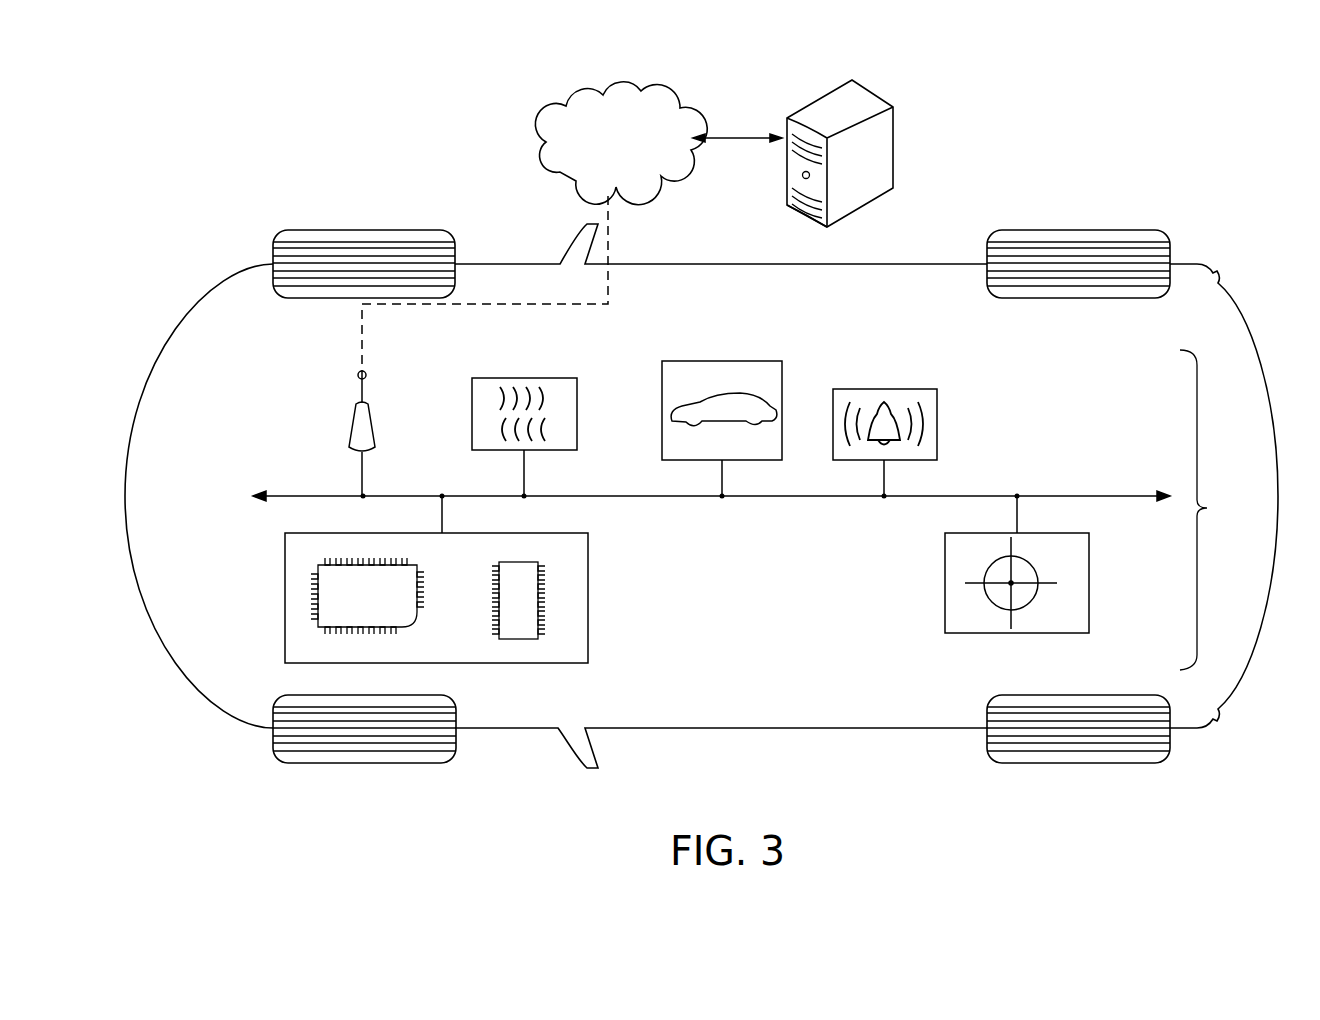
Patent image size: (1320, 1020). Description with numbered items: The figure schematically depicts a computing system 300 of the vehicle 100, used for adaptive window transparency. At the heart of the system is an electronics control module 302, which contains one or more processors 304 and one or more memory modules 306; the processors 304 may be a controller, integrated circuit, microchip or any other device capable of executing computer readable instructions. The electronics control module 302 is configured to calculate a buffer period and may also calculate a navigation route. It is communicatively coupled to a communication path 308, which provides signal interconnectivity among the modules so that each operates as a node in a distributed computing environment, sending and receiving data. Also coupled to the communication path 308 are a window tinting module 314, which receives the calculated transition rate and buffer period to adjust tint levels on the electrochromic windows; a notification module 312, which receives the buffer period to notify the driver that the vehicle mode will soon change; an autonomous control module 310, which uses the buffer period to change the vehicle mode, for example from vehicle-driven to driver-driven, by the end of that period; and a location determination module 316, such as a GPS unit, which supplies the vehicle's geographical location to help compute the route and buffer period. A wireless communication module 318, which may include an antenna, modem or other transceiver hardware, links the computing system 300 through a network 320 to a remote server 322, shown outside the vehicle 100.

The vehicle 100 is at (701, 446).
The computing system 300 is at (1222, 510).
The electronics control module 302 is at (588, 600).
The processors 304 is at (410, 624).
The memory modules 306 is at (498, 562).
The communication path 308 is at (323, 492).
The autonomous control module 310 is at (722, 361).
The notification module 312 is at (900, 389).
The window tinting module 314 is at (577, 413).
The location determination module 316 is at (1089, 585).
The wireless communication module 318 is at (366, 400).
The network 320 is at (540, 136).
The server 322 is at (893, 148).